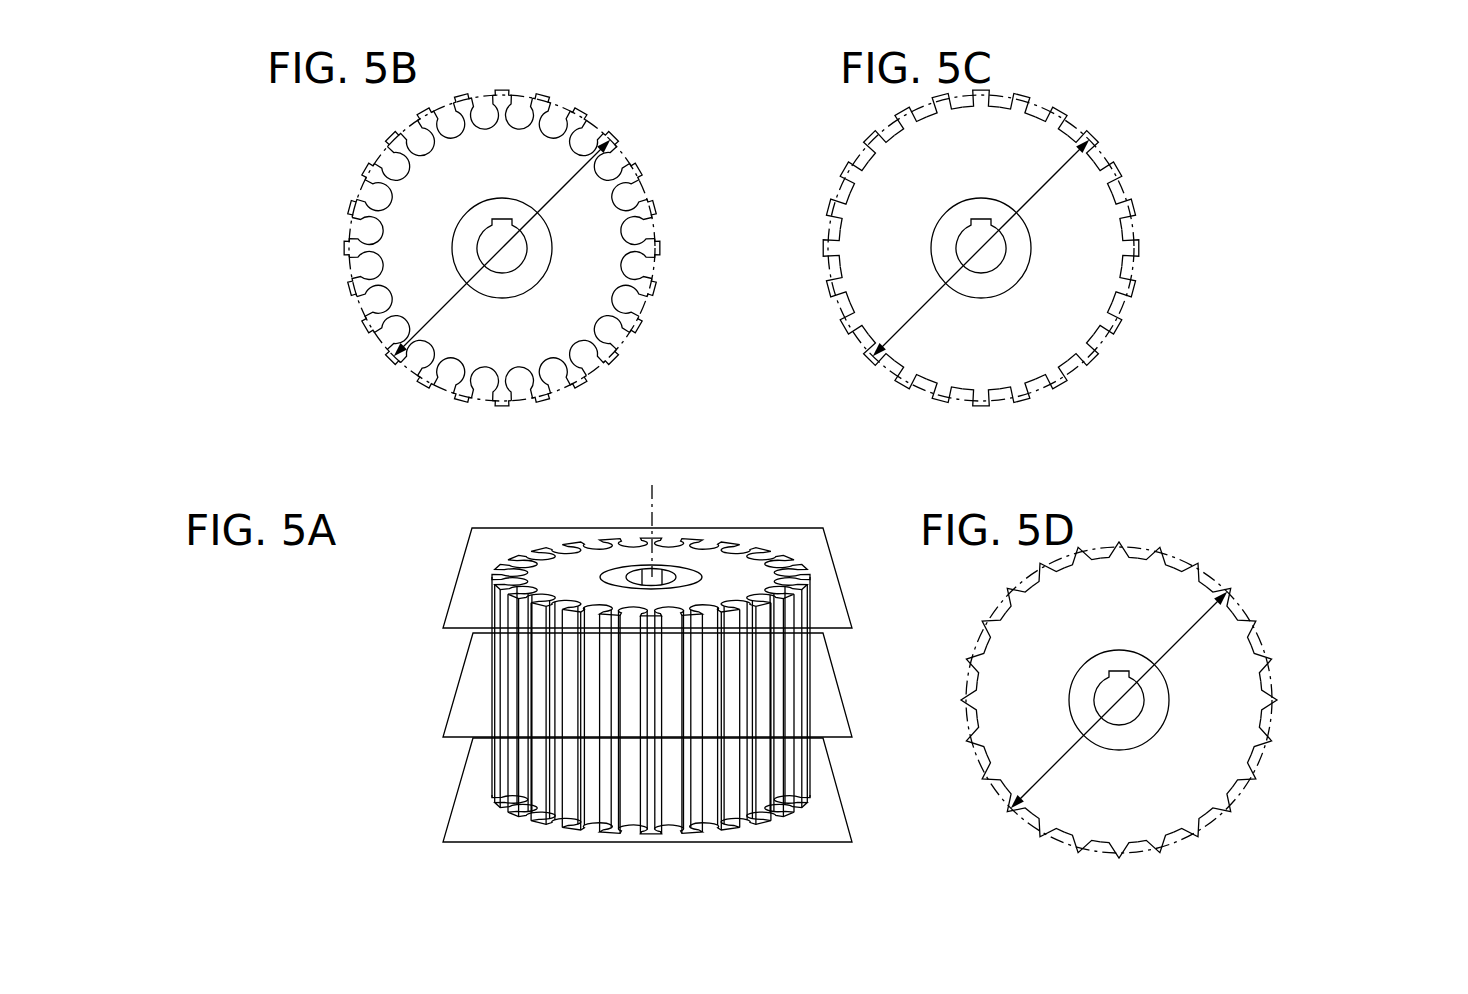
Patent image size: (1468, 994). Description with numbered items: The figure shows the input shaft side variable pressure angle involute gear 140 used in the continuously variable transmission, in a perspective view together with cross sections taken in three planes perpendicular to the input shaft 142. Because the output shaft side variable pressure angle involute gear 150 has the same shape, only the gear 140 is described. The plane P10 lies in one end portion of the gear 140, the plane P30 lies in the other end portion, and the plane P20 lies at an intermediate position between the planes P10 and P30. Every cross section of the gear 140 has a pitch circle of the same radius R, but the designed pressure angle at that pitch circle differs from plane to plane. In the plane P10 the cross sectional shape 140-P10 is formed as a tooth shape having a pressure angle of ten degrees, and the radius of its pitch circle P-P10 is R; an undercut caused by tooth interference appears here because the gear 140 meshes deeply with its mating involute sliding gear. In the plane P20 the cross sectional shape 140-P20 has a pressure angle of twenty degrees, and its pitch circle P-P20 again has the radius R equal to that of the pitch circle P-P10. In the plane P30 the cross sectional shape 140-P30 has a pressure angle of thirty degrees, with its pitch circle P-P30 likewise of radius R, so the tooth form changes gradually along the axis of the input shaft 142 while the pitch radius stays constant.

In FIG. 5B, the cross sectional shape in plane P10 140-P10 is at (612, 136).
In FIG. 5B, the pitch circle P-P10 is at (643, 314).
In FIG. 5C, the cross sectional shape in plane P20 140-P20 is at (1092, 138).
In FIG. 5C, the pitch circle P-P20 is at (1136, 228).
In FIG. 5D, the cross sectional shape in plane P30 140-P30 is at (1229, 590).
In FIG. 5D, the pitch circle P-P30 is at (1273, 668).
In FIG. 5B, the pitch circle radius R is at (502, 248).
In FIG. 5C, the pitch circle radius R is at (981, 248).
In FIG. 5D, the pitch circle radius R is at (1119, 700).
In FIG. 5A, the plane P10 is at (455, 590).
In FIG. 5A, the plane P20 is at (456, 692).
In FIG. 5A, the plane P30 is at (453, 808).
In FIG. 5A, the input shaft side variable pressure angle involute gear 140 is at (493, 702).
In FIG. 5A, the output shaft side variable pressure angle involute gear 150 is at (491, 686).
In FIG. 5A, the input shaft 142 is at (652, 500).